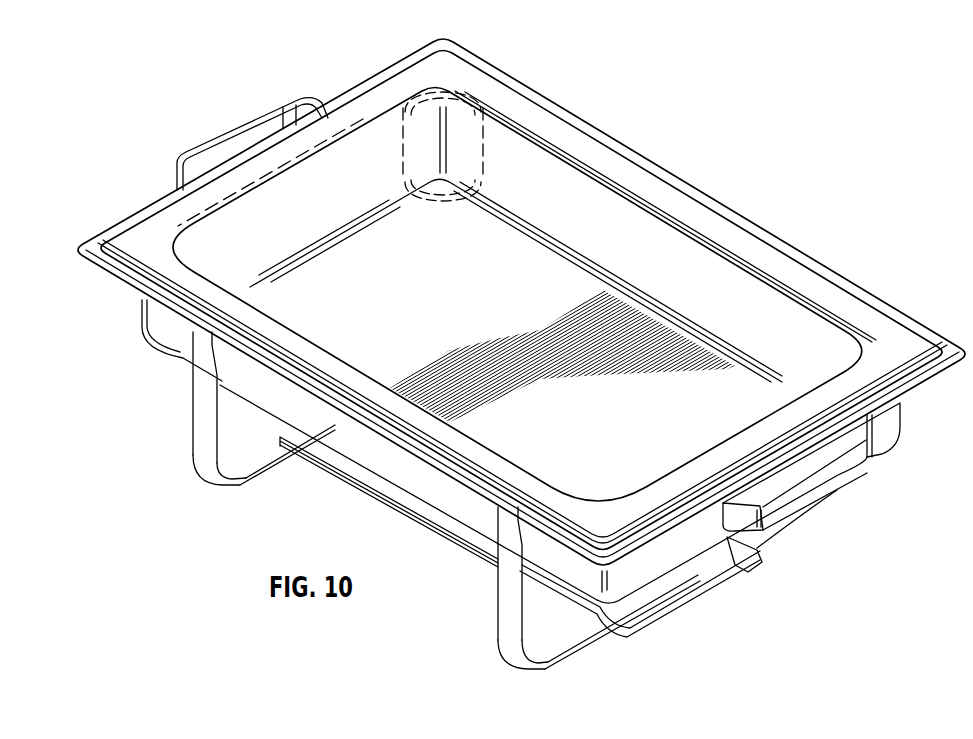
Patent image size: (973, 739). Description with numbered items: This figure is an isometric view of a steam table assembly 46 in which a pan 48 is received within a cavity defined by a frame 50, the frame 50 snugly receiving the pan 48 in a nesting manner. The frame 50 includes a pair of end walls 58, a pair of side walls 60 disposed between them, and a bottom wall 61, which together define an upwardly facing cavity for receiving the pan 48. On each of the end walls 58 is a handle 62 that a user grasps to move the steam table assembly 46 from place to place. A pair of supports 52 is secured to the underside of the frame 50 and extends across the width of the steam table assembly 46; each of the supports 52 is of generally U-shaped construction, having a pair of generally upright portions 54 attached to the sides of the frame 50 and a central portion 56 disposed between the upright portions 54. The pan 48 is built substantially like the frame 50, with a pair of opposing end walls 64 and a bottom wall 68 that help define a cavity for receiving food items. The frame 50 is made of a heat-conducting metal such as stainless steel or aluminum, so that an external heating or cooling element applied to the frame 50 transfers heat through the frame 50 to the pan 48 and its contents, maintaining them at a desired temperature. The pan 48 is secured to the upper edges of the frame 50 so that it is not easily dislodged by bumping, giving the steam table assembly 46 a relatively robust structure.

The steam table assembly 46 is at (790, 140).
The pan 48 is at (767, 304).
The frame 50 is at (462, 532).
The supports 52 is at (207, 448).
The upright portions 54 is at (205, 408).
The central portion 56 is at (266, 466).
The end walls 58 is at (687, 547).
The side walls 60 is at (393, 479).
The bottom wall 61 is at (427, 517).
The handle 62 is at (240, 133).
The end walls 64 is at (317, 183).
The bottom wall 68 is at (463, 282).